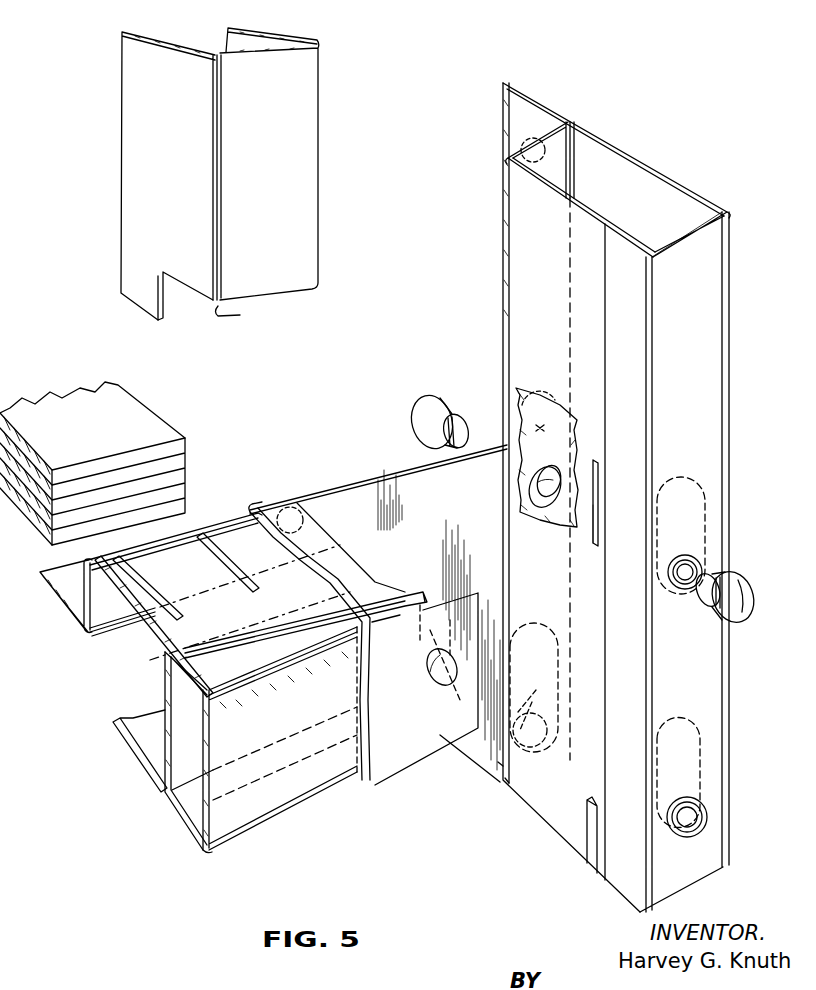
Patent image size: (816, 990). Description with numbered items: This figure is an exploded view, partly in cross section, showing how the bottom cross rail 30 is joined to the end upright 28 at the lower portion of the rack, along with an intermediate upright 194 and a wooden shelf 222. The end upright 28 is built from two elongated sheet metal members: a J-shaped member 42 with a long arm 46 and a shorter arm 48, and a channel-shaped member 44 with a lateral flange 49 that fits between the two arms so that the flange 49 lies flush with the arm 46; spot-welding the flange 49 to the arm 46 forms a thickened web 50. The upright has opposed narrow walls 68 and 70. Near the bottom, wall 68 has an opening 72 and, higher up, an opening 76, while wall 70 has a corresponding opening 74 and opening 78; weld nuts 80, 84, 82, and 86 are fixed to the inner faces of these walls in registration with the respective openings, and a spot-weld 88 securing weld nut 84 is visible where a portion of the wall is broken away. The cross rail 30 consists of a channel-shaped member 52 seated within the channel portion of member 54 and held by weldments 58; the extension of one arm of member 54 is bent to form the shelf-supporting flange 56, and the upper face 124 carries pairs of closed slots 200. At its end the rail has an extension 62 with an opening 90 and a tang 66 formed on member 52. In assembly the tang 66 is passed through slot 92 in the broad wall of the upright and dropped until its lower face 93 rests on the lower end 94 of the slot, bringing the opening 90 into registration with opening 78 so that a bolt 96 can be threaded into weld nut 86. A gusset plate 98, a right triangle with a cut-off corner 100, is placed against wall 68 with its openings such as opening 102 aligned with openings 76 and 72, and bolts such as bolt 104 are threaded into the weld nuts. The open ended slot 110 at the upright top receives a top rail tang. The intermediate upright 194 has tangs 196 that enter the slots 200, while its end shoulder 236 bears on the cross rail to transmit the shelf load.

The intermediate upright 194 is at (305, 117).
The tang 196 is at (157, 318).
The shoulder 236 is at (240, 315).
The shelf 222 is at (155, 425).
The shelf-supporting flange 56 is at (68, 585).
The upper face 124 is at (175, 555).
The slot 200 is at (248, 588).
The sheet metal member 54 is at (160, 640).
The weldment 58 is at (160, 775).
The bottom cross rail 30 is at (315, 780).
The sheet metal member 52 is at (180, 695).
The lower face 93 is at (345, 680).
The gusset plate 98 is at (355, 503).
The opening 102 is at (290, 507).
The extension 62 is at (443, 745).
The tang 66 is at (427, 598).
The opening 90 is at (440, 675).
The bolt 104 is at (412, 410).
The sheet metal member 42 is at (650, 180).
The long arm 46 is at (690, 190).
The arm 48 is at (625, 235).
The thickened web 50 is at (548, 125).
The narrow wall 68 is at (518, 155).
The flange 49 is at (503, 105).
The sheet metal member 44 is at (535, 195).
The narrow wall 70 is at (712, 250).
The open ended slot 110 is at (595, 840).
The weld nut 80 is at (498, 762).
The cut-off corner 100 is at (505, 778).
The weld nut 84 is at (548, 445).
The spot-weld 88 is at (541, 425).
The opening 76 is at (536, 494).
The slot 92 is at (598, 482).
The lower end 94 is at (598, 540).
The opening 72 is at (540, 752).
The weld nut 86 is at (690, 545).
The opening 78 is at (695, 565).
The bolt 96 is at (750, 592).
The weld nut 82 is at (705, 797).
The opening 74 is at (690, 832).
The end upright 28 is at (710, 790).